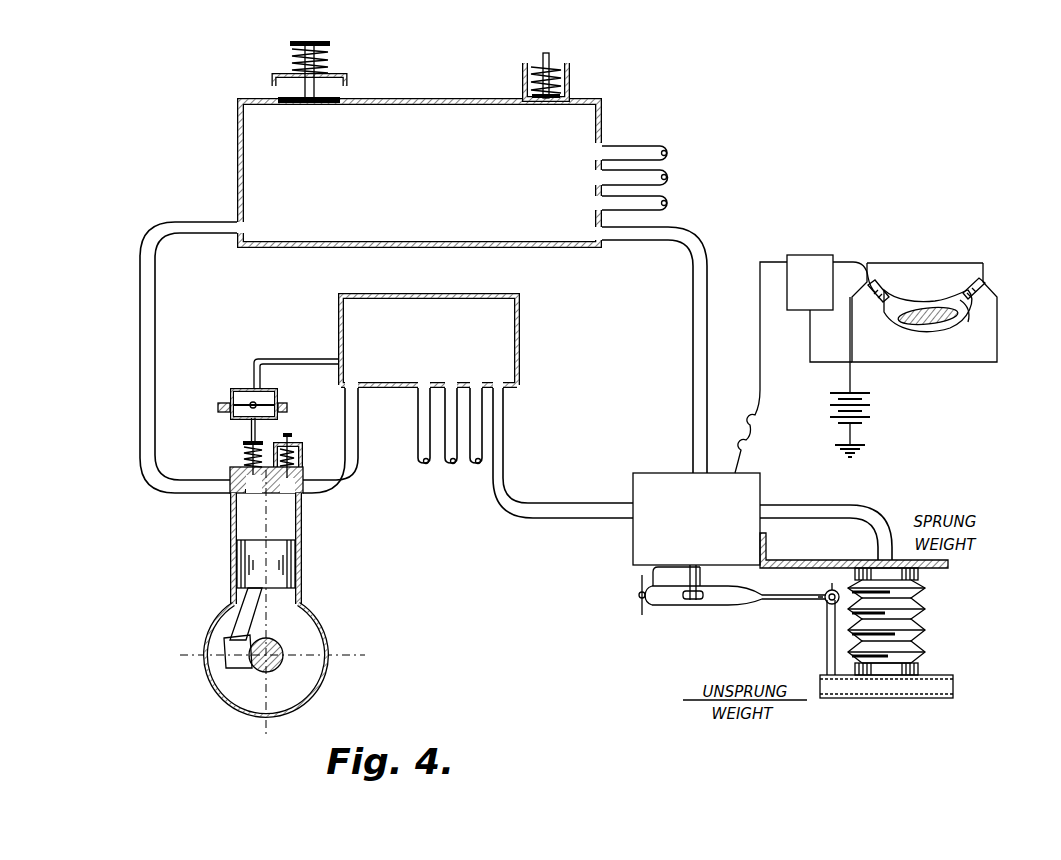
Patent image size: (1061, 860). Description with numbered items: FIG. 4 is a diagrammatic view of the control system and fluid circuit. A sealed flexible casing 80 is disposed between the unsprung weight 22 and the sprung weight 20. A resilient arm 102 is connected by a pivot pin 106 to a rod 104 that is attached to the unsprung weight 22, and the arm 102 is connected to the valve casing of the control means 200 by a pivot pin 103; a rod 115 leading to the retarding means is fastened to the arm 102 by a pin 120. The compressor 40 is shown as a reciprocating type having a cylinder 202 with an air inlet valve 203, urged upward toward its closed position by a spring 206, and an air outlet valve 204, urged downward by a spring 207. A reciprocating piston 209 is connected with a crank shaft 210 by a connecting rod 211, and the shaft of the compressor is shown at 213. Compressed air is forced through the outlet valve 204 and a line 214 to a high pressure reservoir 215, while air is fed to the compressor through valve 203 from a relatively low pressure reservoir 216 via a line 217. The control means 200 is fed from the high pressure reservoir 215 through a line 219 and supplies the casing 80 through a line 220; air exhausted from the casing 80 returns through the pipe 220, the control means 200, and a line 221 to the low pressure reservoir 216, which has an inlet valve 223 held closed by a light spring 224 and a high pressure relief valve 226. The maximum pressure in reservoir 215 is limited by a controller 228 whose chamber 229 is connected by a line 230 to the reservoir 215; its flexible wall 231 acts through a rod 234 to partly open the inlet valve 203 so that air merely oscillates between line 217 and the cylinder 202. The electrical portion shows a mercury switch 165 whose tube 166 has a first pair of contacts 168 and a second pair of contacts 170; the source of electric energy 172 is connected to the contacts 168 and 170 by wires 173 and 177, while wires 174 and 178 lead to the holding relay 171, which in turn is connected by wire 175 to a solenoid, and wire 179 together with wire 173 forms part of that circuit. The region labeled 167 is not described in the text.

The sprung weight 20 is at (800, 558).
The unsprung weight 22 is at (897, 690).
The compressor 40 is at (303, 555).
The sealed flexible casing 80 is at (916, 642).
The resilient arm 102 is at (760, 600).
The pivot pin 103 is at (639, 596).
The rod 104 is at (826, 642).
The pivot pin 106 is at (826, 600).
The rod 115 is at (701, 576).
The pin 120 is at (692, 600).
The mercury switch 165 is at (914, 297).
The tube 166 is at (971, 315).
The flame core 167 is at (927, 325).
The first pair of contacts 168 is at (883, 298).
The second pair of contacts 170 is at (979, 303).
The holding relay 171 is at (798, 262).
The source of electric energy 172 is at (867, 409).
The wire 173 is at (853, 376).
The wire 174 is at (856, 264).
The wire 175 is at (759, 392).
The wire 177 is at (957, 360).
The wire 178 is at (974, 263).
The wire 179 is at (808, 342).
The control means 200 is at (637, 520).
The cylinder 202 is at (233, 520).
The air inlet valve 203 is at (236, 497).
The air outlet valve 204 is at (303, 508).
The spring 206 is at (243, 453).
The spring 207 is at (284, 442).
The reciprocating piston 209 is at (240, 562).
The crank shaft 210 is at (220, 662).
The connecting rod 211 is at (233, 620).
The shaft 213 is at (287, 637).
The line 214 is at (344, 472).
The high pressure reservoir 215 is at (500, 342).
The relatively low pressure reservoir 216 is at (273, 165).
The line 217 is at (148, 307).
The line 219 is at (500, 453).
The line 220 is at (808, 512).
The line 221 is at (658, 200).
The inlet valve 223 is at (310, 105).
The spring 224 is at (330, 56).
The high pressure relief valve 226 is at (570, 97).
The controller 228 is at (248, 388).
The chamber 229 is at (262, 400).
The line 230 is at (273, 357).
The flexible wall 231 is at (232, 393).
The rod 234 is at (250, 430).